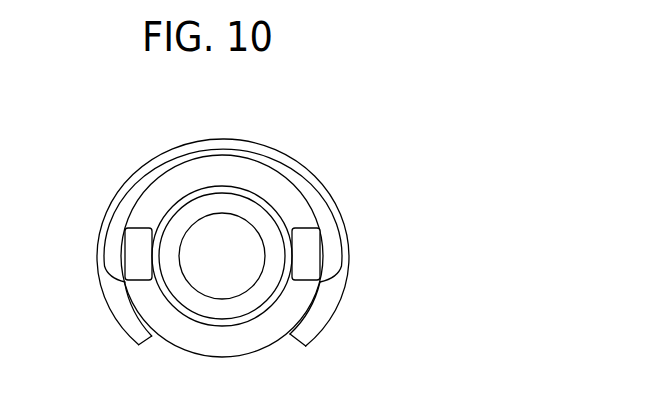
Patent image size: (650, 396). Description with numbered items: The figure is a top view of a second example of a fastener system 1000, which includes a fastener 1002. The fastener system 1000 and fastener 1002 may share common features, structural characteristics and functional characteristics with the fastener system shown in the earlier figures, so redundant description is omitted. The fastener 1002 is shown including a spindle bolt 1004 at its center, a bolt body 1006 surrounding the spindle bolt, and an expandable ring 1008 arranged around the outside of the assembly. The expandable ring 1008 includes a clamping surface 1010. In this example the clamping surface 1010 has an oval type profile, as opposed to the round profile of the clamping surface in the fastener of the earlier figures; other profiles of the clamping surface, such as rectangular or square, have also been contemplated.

The fastener system 1000 is at (503, 146).
The fastener 1002 is at (368, 132).
The spindle bolt 1004 is at (264, 208).
The bolt body 1006 is at (146, 201).
The expandable ring 1008 is at (82, 241).
The clamping surface 1010 is at (110, 262).